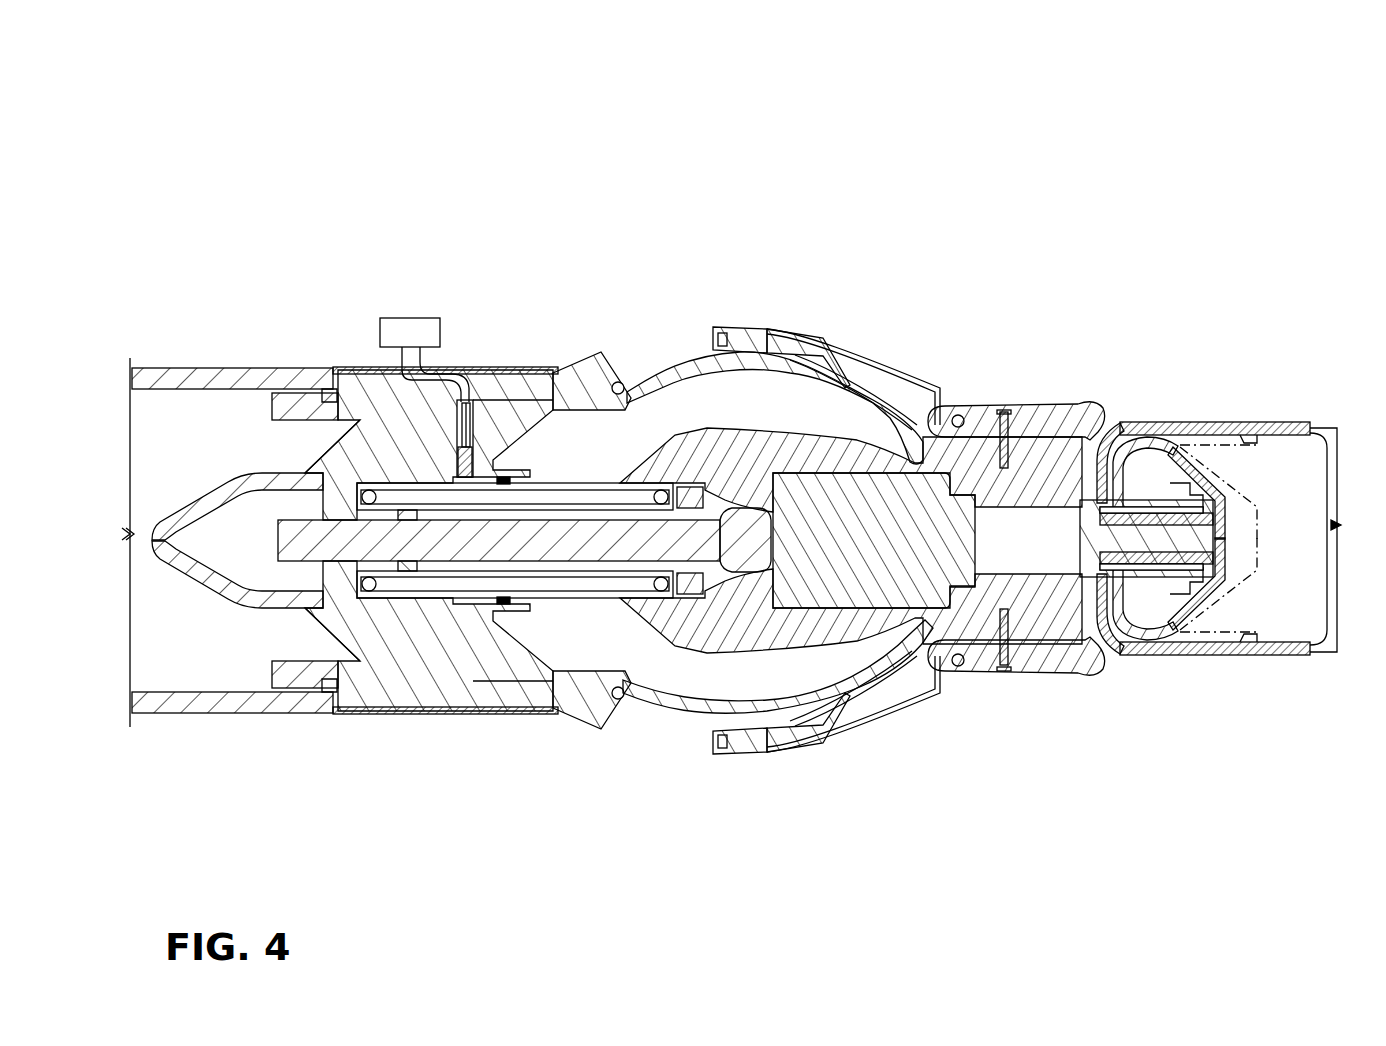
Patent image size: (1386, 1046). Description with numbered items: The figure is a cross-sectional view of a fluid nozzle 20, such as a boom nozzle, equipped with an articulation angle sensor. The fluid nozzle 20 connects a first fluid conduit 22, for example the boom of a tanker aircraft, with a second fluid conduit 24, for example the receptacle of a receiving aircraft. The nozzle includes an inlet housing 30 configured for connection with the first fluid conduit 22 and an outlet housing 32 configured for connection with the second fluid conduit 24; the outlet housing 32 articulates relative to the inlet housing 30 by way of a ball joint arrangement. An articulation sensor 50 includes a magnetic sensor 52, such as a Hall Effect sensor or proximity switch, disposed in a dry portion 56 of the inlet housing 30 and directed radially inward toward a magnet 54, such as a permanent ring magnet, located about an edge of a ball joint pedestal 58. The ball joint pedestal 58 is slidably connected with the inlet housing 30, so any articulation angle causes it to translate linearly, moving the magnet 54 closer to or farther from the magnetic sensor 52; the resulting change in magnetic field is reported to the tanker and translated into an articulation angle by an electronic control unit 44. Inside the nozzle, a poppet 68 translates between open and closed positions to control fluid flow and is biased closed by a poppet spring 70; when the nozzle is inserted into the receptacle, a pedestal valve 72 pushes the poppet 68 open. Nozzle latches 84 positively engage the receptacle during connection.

The fluid nozzle 20 is at (1176, 110).
The first fluid conduit 22 is at (232, 370).
The second fluid conduit 24 is at (1322, 422).
The inlet housing 30 is at (338, 305).
The outlet housing 32 is at (1166, 314).
The electronic control unit 44 is at (398, 316).
The articulation sensor 50 is at (488, 440).
The magnetic sensor 52 is at (373, 378).
The magnet 54 is at (500, 598).
The dry portion 56 is at (430, 465).
The ball joint pedestal 58 is at (655, 605).
The poppet 68 is at (1153, 632).
The poppet spring 70 is at (1140, 508).
The pedestal valve 72 is at (1203, 601).
The nozzle latch 84 is at (1058, 420).